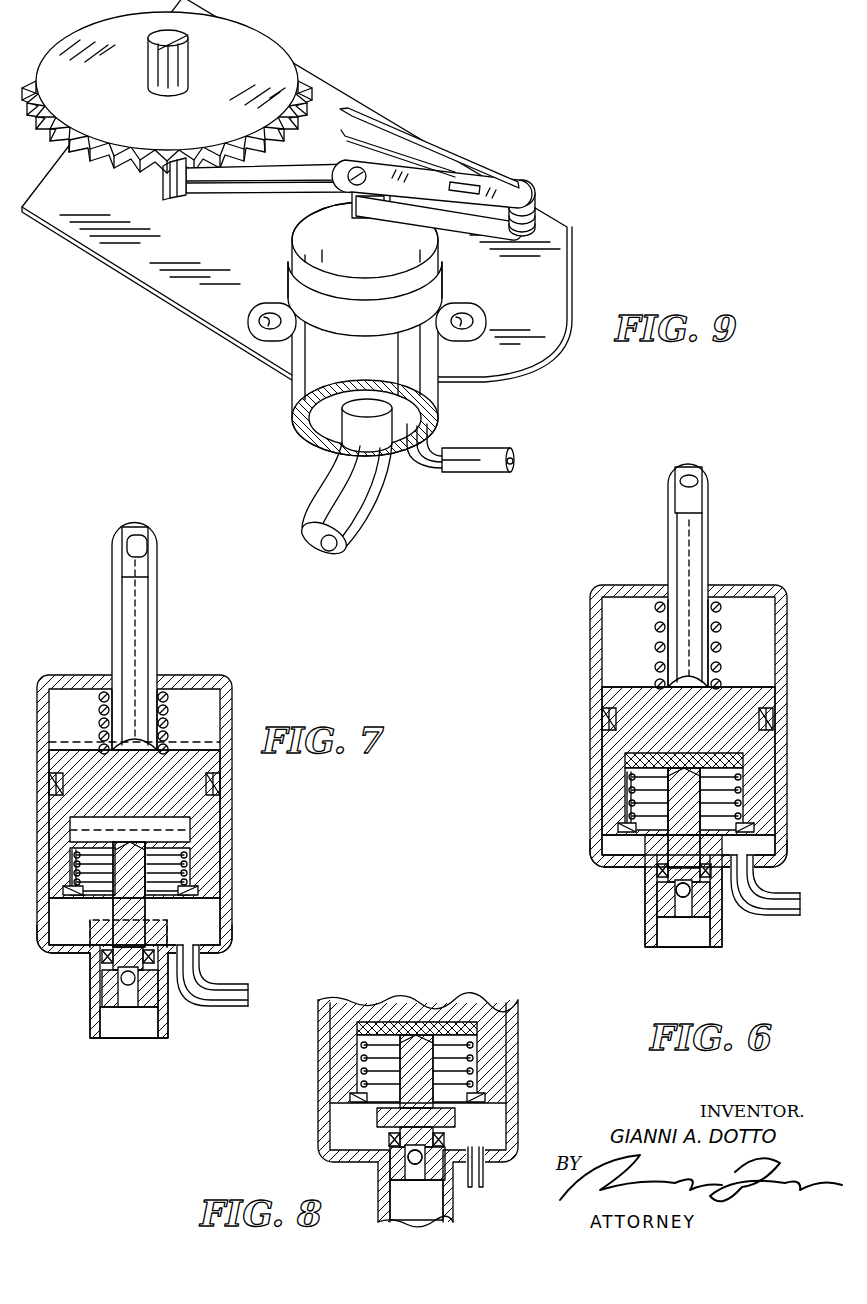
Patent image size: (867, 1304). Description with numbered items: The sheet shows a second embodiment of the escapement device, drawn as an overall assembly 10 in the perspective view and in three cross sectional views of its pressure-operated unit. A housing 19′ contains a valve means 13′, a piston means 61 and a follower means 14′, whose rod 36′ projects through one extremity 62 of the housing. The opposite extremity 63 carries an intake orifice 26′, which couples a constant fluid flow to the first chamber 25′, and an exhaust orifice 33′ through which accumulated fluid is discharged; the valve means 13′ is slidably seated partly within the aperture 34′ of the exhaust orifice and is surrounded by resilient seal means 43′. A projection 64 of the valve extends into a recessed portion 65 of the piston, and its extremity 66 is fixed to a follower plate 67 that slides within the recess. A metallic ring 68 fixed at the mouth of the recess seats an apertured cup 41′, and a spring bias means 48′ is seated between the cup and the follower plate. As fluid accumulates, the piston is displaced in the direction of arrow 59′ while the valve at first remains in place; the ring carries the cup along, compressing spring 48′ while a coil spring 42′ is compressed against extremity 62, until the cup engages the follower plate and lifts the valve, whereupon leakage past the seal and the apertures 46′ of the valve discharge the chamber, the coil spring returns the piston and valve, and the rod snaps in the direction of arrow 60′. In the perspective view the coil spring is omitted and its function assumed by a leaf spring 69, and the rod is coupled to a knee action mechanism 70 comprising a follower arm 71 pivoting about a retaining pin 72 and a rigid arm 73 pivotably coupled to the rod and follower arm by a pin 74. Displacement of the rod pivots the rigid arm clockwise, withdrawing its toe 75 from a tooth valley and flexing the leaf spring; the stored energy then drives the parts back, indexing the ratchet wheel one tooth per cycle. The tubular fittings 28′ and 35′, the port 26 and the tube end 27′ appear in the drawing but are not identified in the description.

In FIG. 9, the pump assembly 10 is at (230, 356).
In FIG. 9, the rigid arm 73 is at (324, 162).
In FIG. 9, the knee action mechanism 70 is at (465, 146).
In FIG. 9, the leaf spring 69 is at (487, 168).
In FIG. 9, the retaining pin 72 is at (532, 190).
In FIG. 9, the toe 75 is at (177, 197).
In FIG. 9, the pin 74 is at (350, 193).
In FIG. 9, the rod 36′ is at (357, 214).
In FIG. 7, the rod 36′ is at (127, 659).
In FIG. 6, the rod 36′ is at (675, 572).
In FIG. 9, the follower arm 71 is at (451, 224).
In FIG. 9, the outlet pipe 28′ is at (503, 470).
In FIG. 9, the inlet tube 35′ is at (348, 545).
In FIG. 7, the follower means 14′ is at (147, 616).
In FIG. 6, the follower means 14′ is at (697, 527).
In FIG. 7, the extremity of the housing 62 is at (205, 684).
In FIG. 6, the extremity of the housing 62 is at (740, 596).
In FIG. 7, the coil spring 42′ is at (98, 723).
In FIG. 6, the coil spring 42′ is at (655, 640).
In FIG. 7, the housing 19′ is at (47, 796).
In FIG. 6, the housing 19′ is at (600, 718).
In FIG. 7, the piston means 61 is at (140, 797).
In FIG. 6, the piston means 61 is at (745, 700).
In FIG. 7, the recessed portion 65 is at (77, 825).
In FIG. 6, the recessed portion 65 is at (625, 778).
In FIG. 8, the recessed portion 65 is at (357, 1048).
In FIG. 7, the extremity of the valve projection 66 is at (133, 848).
In FIG. 6, the extremity of the valve projection 66 is at (680, 752).
In FIG. 8, the extremity of the valve projection 66 is at (418, 1022).
In FIG. 7, the follower plate 67 is at (188, 845).
In FIG. 6, the follower plate 67 is at (745, 760).
In FIG. 8, the follower plate 67 is at (380, 1021).
In FIG. 7, the apertured cup 41′ is at (73, 873).
In FIG. 6, the apertured cup 41′ is at (625, 800).
In FIG. 7, the spring bias means 48′ is at (190, 870).
In FIG. 6, the spring bias means 48′ is at (745, 785).
In FIG. 8, the spring bias means 48′ is at (478, 1050).
In FIG. 7, the valve projection 64 is at (113, 905).
In FIG. 6, the valve projection 64 is at (696, 797).
In FIG. 7, the ring 68 is at (184, 891).
In FIG. 6, the ring 68 is at (745, 826).
In FIG. 8, the ring 68 is at (472, 1099).
In FIG. 7, the first chamber 25′ is at (48, 915).
In FIG. 6, the first chamber 25′ is at (612, 843).
In FIG. 7, the valve means 13′ is at (84, 930).
In FIG. 6, the valve means 13′ is at (647, 894).
In FIG. 8, the valve means 13′ is at (370, 1118).
In FIG. 7, the extremity of the housing 63 is at (62, 958).
In FIG. 6, the extremity of the housing 63 is at (612, 868).
In FIG. 8, the extremity of the housing 63 is at (343, 1163).
In FIG. 7, the resilient seal means 43′ is at (105, 960).
In FIG. 6, the resilient seal means 43′ is at (658, 870).
In FIG. 8, the resilient seal means 43′ is at (390, 1136).
In FIG. 7, the exhaust orifice 33′ is at (93, 1017).
In FIG. 6, the exhaust orifice 33′ is at (650, 928).
In FIG. 7, the aperture 34′ is at (125, 1030).
In FIG. 6, the aperture 34′ is at (683, 935).
In FIG. 8, the aperture 34′ is at (430, 1208).
In FIG. 6, the apertures 46′ is at (707, 891).
In FIG. 8, the apertures 46′ is at (437, 1157).
In FIG. 7, the intake orifice 26′ is at (226, 992).
In FIG. 6, the intake orifice 26′ is at (768, 897).
In FIG. 8, the inlet port 26 is at (485, 1188).
In FIG. 7, the inlet tube end 27′ is at (250, 995).
In FIG. 6, the inlet tube end 27′ is at (802, 902).
In FIG. 7, the arrow 59′ is at (98, 562).
In FIG. 6, the arrow 59′ is at (616, 512).
In FIG. 8, the arrow 59′ is at (398, 906).
In FIG. 7, the arrow 60′ is at (52, 656).
In FIG. 6, the arrow 60′ is at (624, 515).
In FIG. 8, the arrow 60′ is at (428, 903).